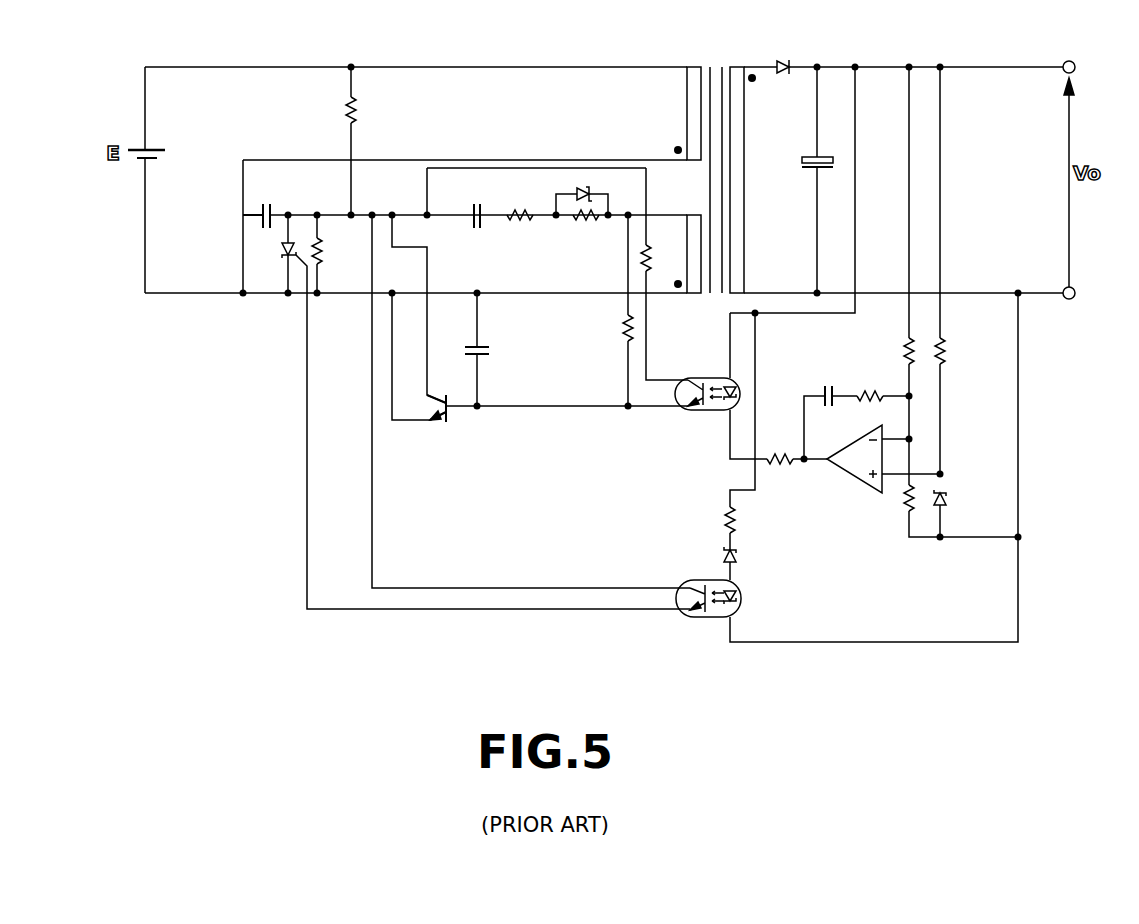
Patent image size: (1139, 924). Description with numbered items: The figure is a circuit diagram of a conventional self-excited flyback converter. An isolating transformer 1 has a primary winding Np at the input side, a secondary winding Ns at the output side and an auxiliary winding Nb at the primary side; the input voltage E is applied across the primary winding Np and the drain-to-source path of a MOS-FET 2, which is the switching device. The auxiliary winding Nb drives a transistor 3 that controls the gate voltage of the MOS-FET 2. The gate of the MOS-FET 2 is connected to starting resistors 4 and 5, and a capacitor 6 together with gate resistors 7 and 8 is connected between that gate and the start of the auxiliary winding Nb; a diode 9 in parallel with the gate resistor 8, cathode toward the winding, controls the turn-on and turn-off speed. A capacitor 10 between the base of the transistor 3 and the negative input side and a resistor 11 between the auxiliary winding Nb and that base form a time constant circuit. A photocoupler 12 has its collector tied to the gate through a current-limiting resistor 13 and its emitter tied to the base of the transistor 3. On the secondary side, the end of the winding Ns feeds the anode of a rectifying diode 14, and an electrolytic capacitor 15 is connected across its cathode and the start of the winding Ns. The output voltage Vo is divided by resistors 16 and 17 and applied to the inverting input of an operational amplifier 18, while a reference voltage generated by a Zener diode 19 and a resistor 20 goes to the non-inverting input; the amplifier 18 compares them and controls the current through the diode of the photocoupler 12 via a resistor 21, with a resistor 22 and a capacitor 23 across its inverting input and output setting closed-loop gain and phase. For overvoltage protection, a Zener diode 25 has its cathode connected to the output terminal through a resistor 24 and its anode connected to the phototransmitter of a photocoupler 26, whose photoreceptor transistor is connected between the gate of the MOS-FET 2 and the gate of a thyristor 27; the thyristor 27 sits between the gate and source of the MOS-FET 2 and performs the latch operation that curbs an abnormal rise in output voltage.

The isolating transformer 1 is at (717, 62).
The MOS-FET 2 is at (266, 204).
The transistor 3 is at (441, 413).
The starting resistor 4 is at (347, 110).
The starting resistor 5 is at (323, 252).
The capacitor 6 is at (472, 206).
The gate resistor 7 is at (516, 212).
The gate resistor 8 is at (585, 220).
The diode 9 is at (595, 190).
The capacitor 10 is at (490, 352).
The resistor 11 is at (626, 328).
The photocoupler 12 is at (700, 412).
The resistor 13 is at (641, 262).
The rectifying diode 14 is at (783, 58).
The electrolytic capacitor 15 is at (808, 168).
The resistor 16 is at (906, 350).
The resistor 17 is at (906, 502).
The operational amplifier 18 is at (856, 478).
The Zener diode 19 is at (948, 500).
The resistor 20 is at (946, 350).
The resistor 21 is at (780, 466).
The resistor 22 is at (861, 393).
The capacitor 23 is at (823, 386).
The resistor 24 is at (725, 520).
The Zener diode 25 is at (738, 554).
The photocoupler 26 is at (710, 619).
The thyristor 27 is at (283, 252).